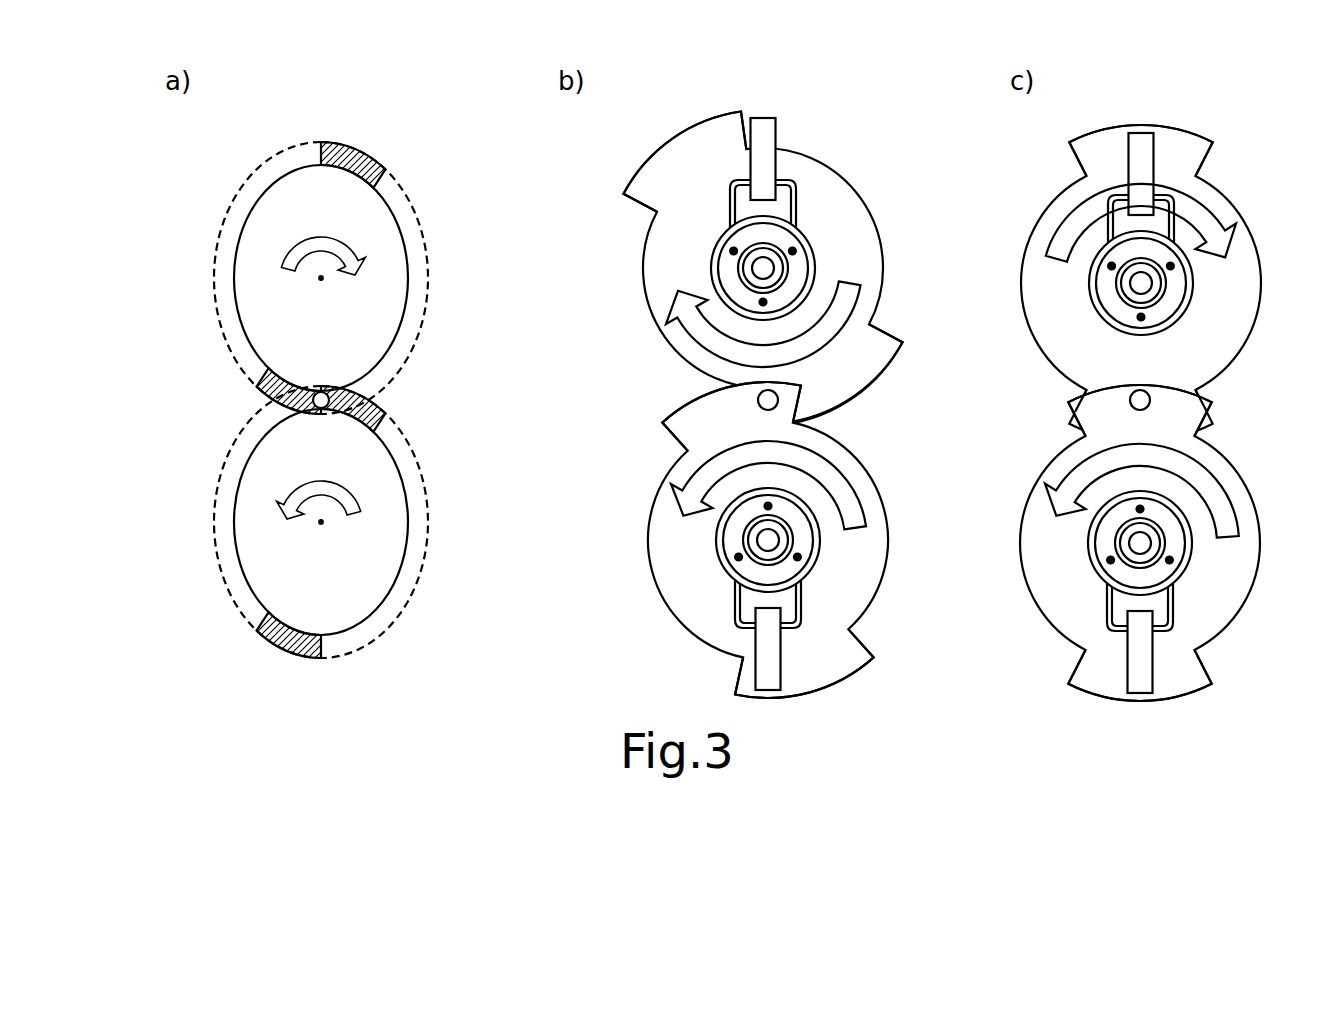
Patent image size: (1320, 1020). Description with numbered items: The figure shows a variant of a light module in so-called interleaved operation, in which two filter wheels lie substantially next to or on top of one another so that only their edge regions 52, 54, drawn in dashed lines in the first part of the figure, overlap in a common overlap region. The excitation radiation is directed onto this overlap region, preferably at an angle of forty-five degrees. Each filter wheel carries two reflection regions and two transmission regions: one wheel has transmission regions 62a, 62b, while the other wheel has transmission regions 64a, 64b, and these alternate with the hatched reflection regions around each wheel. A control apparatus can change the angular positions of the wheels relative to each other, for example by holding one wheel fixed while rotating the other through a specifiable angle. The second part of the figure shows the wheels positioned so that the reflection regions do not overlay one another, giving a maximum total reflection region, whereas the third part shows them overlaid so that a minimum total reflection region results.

The edge region 52 is at (307, 278).
The edge region 54 is at (326, 522).
The transmission region 62a is at (217, 486).
The transmission region 62b is at (417, 560).
The transmission region 64a is at (215, 262).
The transmission region 64b is at (416, 222).